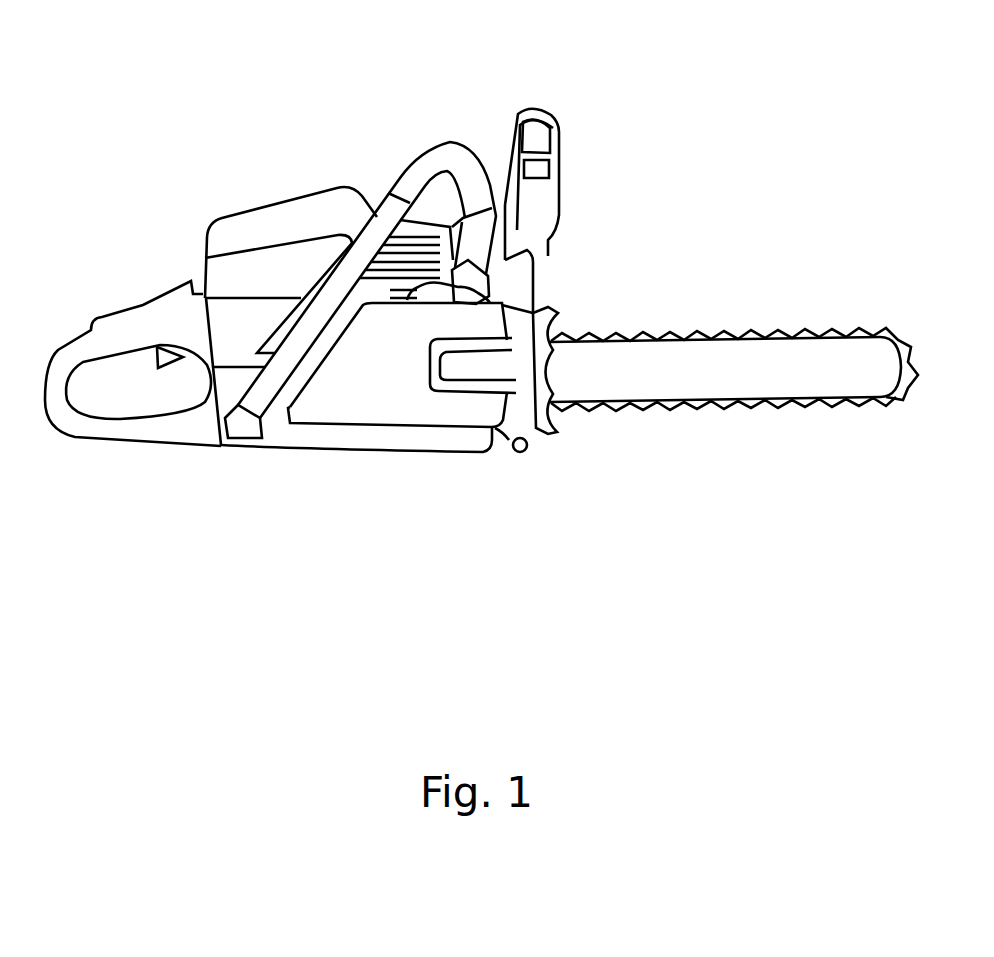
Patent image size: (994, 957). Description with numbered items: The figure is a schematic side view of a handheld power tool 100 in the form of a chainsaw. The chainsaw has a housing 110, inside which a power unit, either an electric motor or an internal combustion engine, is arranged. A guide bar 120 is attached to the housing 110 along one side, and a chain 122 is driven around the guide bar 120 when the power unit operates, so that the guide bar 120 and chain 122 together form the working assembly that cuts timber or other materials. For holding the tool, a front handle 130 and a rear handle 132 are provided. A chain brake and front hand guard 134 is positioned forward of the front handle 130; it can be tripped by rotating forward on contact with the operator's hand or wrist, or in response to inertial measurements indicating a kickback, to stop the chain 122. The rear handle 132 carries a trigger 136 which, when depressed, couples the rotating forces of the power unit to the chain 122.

The handheld power tool 100 is at (608, 116).
The housing 110 is at (541, 257).
The guide bar 120 is at (672, 385).
The chain 122 is at (783, 402).
The front handle 130 is at (440, 162).
The rear handle 132 is at (120, 432).
The chain brake and front hand guard 134 is at (520, 107).
The trigger 136 is at (163, 357).